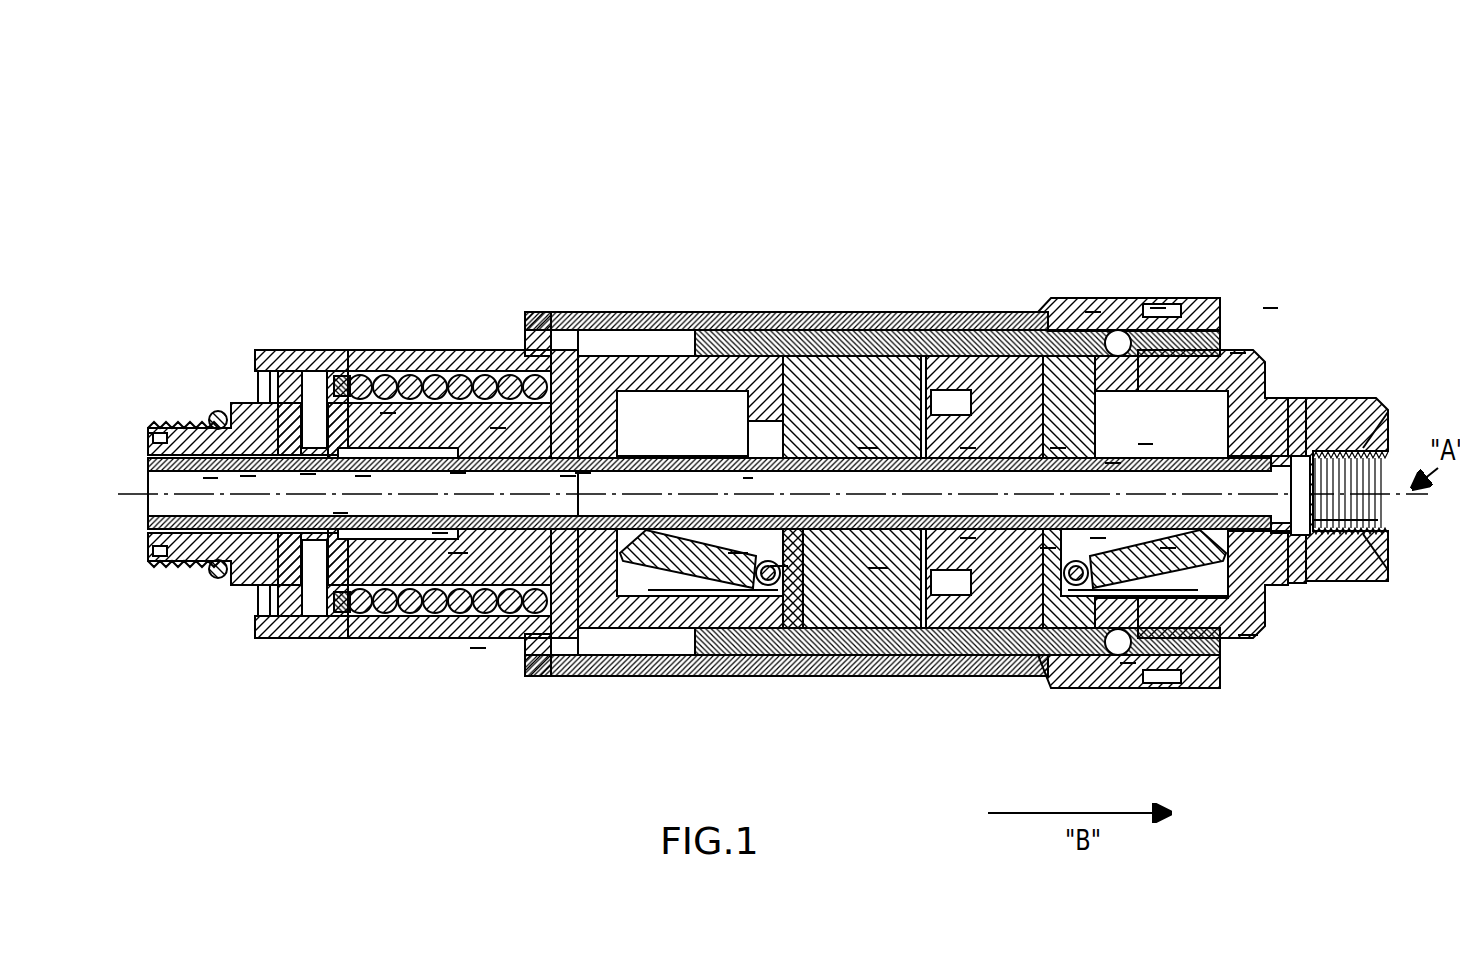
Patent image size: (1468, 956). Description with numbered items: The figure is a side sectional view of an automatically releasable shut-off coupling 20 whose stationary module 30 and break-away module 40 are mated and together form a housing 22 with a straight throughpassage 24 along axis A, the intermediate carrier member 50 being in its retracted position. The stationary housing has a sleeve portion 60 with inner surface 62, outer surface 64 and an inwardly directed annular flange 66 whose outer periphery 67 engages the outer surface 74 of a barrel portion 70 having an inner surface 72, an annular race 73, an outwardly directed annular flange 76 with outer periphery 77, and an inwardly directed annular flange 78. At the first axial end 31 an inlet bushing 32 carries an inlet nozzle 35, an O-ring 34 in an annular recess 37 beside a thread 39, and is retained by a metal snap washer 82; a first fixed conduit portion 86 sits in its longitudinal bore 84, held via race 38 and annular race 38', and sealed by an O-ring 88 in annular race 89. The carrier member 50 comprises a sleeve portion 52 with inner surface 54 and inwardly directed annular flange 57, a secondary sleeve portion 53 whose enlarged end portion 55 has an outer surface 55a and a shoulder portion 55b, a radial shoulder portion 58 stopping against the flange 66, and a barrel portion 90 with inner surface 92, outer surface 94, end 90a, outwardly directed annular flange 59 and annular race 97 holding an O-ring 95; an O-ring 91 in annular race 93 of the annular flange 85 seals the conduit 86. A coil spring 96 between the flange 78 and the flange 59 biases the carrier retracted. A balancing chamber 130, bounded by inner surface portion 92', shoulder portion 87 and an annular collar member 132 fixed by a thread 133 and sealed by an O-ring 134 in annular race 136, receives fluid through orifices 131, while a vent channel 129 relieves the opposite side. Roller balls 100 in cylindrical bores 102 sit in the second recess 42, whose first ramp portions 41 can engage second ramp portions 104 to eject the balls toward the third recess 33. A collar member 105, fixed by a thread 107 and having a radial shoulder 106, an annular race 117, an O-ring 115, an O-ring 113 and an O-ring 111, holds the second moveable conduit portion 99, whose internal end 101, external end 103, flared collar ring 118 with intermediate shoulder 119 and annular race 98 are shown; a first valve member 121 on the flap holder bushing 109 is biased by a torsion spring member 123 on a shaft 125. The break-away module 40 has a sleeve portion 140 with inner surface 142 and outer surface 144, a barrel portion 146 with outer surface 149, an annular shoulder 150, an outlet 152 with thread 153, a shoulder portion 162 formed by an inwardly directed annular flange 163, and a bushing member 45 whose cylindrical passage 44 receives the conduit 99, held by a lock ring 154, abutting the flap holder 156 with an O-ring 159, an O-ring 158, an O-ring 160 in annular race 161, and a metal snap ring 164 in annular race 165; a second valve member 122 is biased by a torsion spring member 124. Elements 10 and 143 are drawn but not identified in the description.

The fitting 10 is at (150, 420).
The automatically releasable shut-off coupling 20 is at (1012, 124).
The housing 22 is at (1230, 345).
The throughpassage 24 is at (709, 493).
The stationary module 30 is at (616, 122).
The first axial end 31 is at (146, 428).
The inlet bushing 32 is at (238, 395).
The third recess 33 is at (1150, 300).
The O-ring 34 is at (210, 405).
The inlet nozzle 35 is at (162, 420).
The annular recess 37 is at (190, 420).
The race 38 is at (126, 490).
The annular race 38' is at (187, 601).
The thread 39 is at (160, 557).
The break-away module 40 is at (1375, 300).
The first ramp portions 41 is at (1058, 304).
The second recess 42 is at (1170, 383).
The cylindrical passage 44 is at (1105, 455).
The bushing member 45 is at (960, 668).
The intermediate carrier member 50 is at (1250, 345).
The sleeve portion 52 is at (970, 304).
The secondary sleeve portion 53 is at (660, 348).
The inner surface 54 is at (990, 304).
The enlarged end portion 55 is at (800, 304).
The outer surface 55a is at (905, 304).
The shoulder portion 55b is at (773, 304).
The inwardly directed annular flange 57 is at (700, 323).
The radial shoulder portion 58 is at (608, 395).
The outwardly directed annular flange 59 is at (370, 342).
The sleeve portion 60 is at (752, 304).
The inner surface 62 is at (660, 304).
The outer surface 64 is at (698, 304).
The inwardly directed annular flange 66 is at (520, 305).
The outer periphery 67 is at (532, 304).
The barrel portion 70 is at (430, 342).
The inner surface 72 is at (306, 363).
The annular race 73 is at (282, 342).
The outer surface 74 is at (465, 363).
The outwardly directed annular flange 76 is at (580, 304).
The outer periphery 77 is at (560, 304).
The inwardly directed annular flange 78 is at (605, 304).
The metal snap washer 82 is at (262, 347).
The longitudinal bore 84 is at (300, 468).
The annular flange 85 is at (432, 525).
The first fixed conduit portion 86 is at (240, 470).
The shoulder portion 87 is at (450, 545).
The O-ring 88 is at (200, 475).
The annular race 89 is at (330, 363).
The barrel portion 90 is at (392, 608).
The end 90a is at (306, 612).
The O-ring 91 is at (432, 420).
The inner surface 92 is at (568, 495).
The portion of inner surface 92' is at (380, 508).
The annular race 93 is at (380, 405).
The outer surface 94 is at (352, 342).
The O-ring 95 is at (545, 421).
The coil spring 96 is at (470, 640).
The annular race 97 is at (490, 420).
The annular race 98 is at (960, 440).
The second moveable conduit portion 99 is at (770, 558).
The roller balls 100 is at (1122, 330).
The internal end 101 is at (592, 482).
The cylindrical bores 102 is at (1085, 304).
The external end 103 is at (1270, 480).
The second ramp portions 104 is at (1110, 310).
The collar member 105 is at (880, 668).
The radial shoulder 106 is at (860, 440).
The thread 107 is at (872, 304).
The annular flap holder bushing 109 is at (758, 415).
The O-ring 111 is at (735, 480).
The O-ring 113 is at (838, 304).
The O-ring 115 is at (870, 560).
The annular race 117 is at (920, 450).
The flared collar ring 118 is at (660, 448).
The intermediate shoulder 119 is at (675, 441).
The first valve member 121 is at (728, 540).
The second valve member 122 is at (1160, 540).
The torsion spring member 123 is at (600, 640).
The torsion spring member 124 is at (1220, 640).
The shaft 125 is at (770, 640).
The vent channel 129 is at (483, 608).
The balancing chamber 130 is at (432, 608).
The orifices 131 is at (450, 465).
The annular collar member 132 is at (248, 580).
The thread 133 is at (270, 630).
The O-ring 134 is at (355, 470).
The annular race 136 is at (330, 500).
The sleeve portion 140 is at (1240, 630).
The inner surface 142 is at (1140, 385).
The nut face 143 is at (1310, 392).
The outer surface 144 is at (1262, 300).
The barrel portion 146 is at (1382, 400).
The outer surface 149 is at (1365, 576).
The annular shoulder 150 is at (1245, 600).
The outlet 152 is at (1350, 493).
The thread 153 is at (1383, 420).
The lock ring 154 is at (935, 304).
The flap holder 156 is at (1140, 436).
The O-ring 158 is at (1088, 433).
The O-ring 159 is at (1030, 304).
The O-ring 160 is at (1050, 440).
The annular race 161 is at (1090, 530).
The shoulder portion 162 is at (1288, 395).
The inwardly directed annular flange 163 is at (1370, 512).
The metal snap ring 164 is at (1040, 540).
The annular race 165 is at (960, 530).